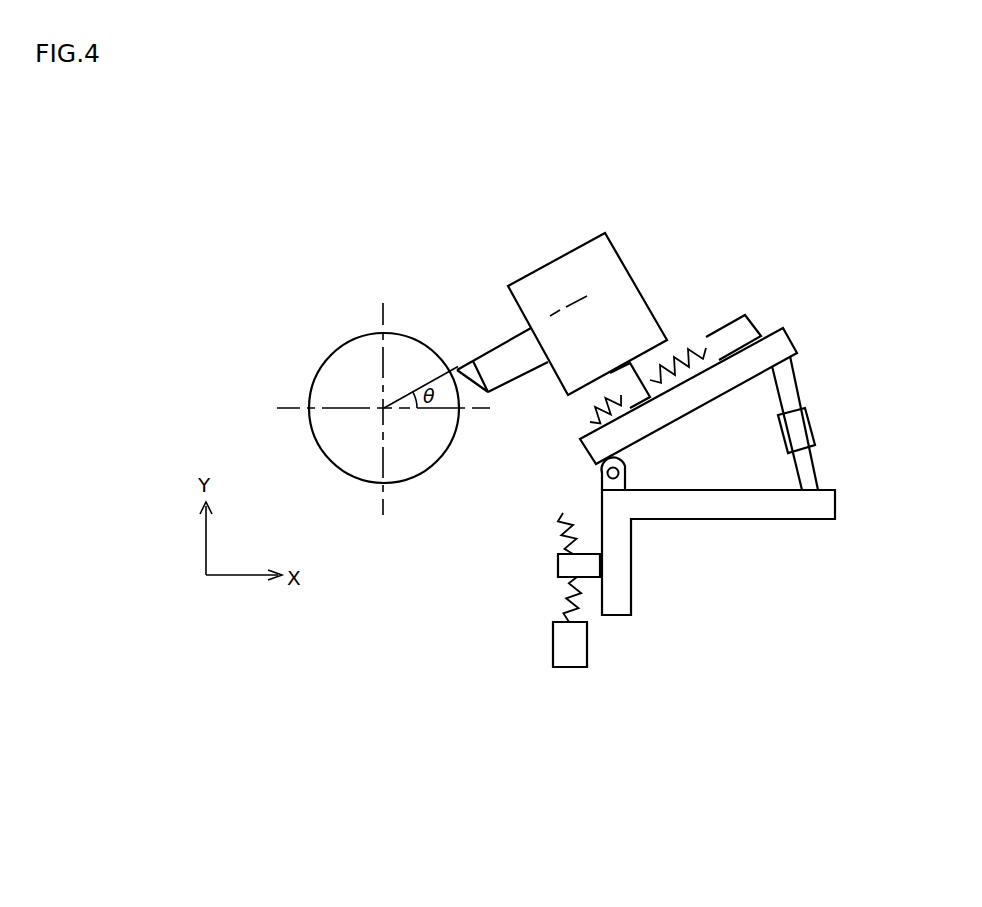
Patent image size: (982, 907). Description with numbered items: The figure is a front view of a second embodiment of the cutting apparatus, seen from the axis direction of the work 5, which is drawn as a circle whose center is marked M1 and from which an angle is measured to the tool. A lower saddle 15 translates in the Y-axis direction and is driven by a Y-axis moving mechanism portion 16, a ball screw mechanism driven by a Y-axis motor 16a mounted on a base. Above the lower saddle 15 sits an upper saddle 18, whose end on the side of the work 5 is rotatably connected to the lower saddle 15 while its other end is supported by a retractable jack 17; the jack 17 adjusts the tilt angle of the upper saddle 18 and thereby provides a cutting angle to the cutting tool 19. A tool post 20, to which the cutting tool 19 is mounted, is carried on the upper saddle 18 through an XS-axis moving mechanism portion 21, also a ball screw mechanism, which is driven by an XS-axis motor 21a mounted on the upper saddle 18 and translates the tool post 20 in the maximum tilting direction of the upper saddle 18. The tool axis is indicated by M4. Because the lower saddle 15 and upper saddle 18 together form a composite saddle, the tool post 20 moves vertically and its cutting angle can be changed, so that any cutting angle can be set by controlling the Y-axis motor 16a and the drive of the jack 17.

The work 5 is at (350, 340).
The center of workpiece M1 is at (383, 407).
The cutting tool 19 is at (484, 352).
The tool post 20 is at (562, 250).
The tool axis M4 is at (550, 315).
The upper saddle 18 is at (783, 348).
The XS-axis motor 21a is at (725, 330).
The XS-axis moving mechanism portion 21 is at (556, 445).
The jack 17 is at (798, 432).
The lower saddle 15 is at (773, 520).
The Y-axis moving mechanism portion 16 is at (533, 618).
The Y-axis motor 16a is at (570, 667).